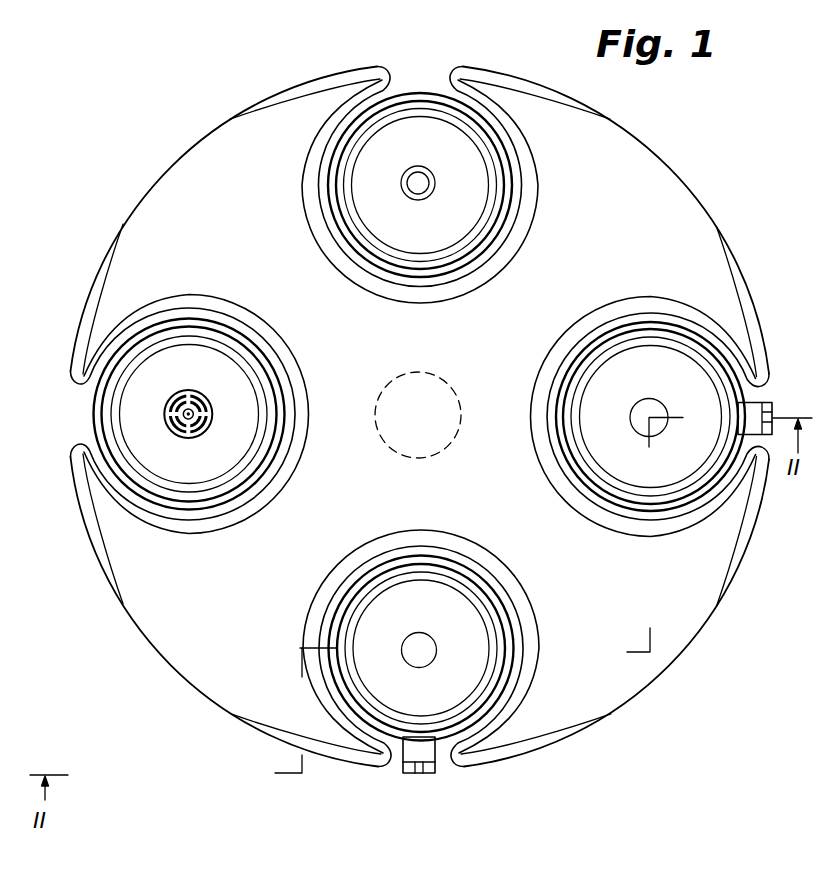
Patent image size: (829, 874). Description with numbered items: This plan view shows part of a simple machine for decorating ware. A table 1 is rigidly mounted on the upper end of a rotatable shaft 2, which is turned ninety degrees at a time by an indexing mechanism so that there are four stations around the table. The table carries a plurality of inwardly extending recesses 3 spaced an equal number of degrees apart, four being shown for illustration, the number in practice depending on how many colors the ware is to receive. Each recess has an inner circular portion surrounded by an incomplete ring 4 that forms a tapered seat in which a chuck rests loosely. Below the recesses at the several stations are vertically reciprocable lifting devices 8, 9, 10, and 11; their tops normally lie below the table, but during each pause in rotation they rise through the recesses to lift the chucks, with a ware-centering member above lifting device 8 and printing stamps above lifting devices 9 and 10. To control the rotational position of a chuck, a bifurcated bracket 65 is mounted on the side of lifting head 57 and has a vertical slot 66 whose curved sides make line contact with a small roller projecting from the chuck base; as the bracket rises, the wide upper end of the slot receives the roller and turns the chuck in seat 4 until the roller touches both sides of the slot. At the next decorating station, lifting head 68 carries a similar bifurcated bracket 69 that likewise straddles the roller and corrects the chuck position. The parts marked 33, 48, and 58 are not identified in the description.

The table 1 is at (628, 172).
The rotatable shaft 2 is at (452, 378).
The recesses 3 is at (103, 380).
The incomplete ring 4 is at (103, 353).
The lifting device 8 is at (104, 424).
The lifting device 9 is at (445, 740).
The lifting device 10 is at (741, 442).
The lifting device 11 is at (439, 90).
The arm 33 is at (118, 455).
The grid 48 is at (187, 403).
The lifting head 57 is at (503, 647).
The opening 58 is at (437, 658).
The bifurcated bracket 65 is at (412, 752).
The vertical slot 66 is at (417, 773).
The lifting head 68 is at (692, 345).
The bifurcated bracket 69 is at (769, 404).